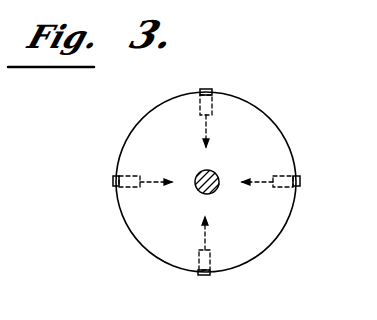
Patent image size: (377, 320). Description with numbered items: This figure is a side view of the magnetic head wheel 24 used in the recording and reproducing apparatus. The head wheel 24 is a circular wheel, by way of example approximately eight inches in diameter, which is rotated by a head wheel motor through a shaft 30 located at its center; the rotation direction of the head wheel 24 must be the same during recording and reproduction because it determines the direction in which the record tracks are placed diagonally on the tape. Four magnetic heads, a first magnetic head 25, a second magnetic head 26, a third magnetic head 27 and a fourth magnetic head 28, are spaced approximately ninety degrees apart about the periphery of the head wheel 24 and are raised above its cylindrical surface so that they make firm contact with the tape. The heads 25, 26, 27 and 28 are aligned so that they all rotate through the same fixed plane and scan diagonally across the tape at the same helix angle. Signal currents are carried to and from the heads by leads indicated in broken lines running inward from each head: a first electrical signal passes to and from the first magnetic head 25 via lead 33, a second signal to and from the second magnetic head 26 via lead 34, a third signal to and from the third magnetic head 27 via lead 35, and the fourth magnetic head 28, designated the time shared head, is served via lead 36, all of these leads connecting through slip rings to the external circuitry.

The head wheel 24 is at (262, 113).
The first magnetic head 25 is at (208, 89).
The second magnetic head 26 is at (300, 182).
The third magnetic head 27 is at (204, 275).
The fourth magnetic head 28 is at (113, 180).
The shaft 30 is at (215, 173).
The lead 33 is at (207, 139).
The lead 34 is at (262, 183).
The lead 35 is at (205, 234).
The lead 36 is at (163, 181).